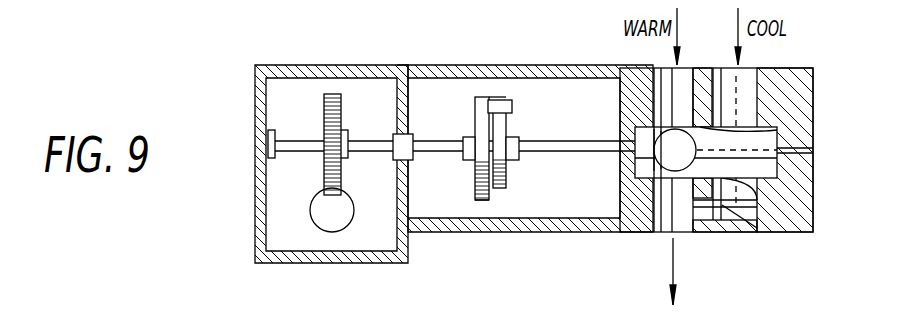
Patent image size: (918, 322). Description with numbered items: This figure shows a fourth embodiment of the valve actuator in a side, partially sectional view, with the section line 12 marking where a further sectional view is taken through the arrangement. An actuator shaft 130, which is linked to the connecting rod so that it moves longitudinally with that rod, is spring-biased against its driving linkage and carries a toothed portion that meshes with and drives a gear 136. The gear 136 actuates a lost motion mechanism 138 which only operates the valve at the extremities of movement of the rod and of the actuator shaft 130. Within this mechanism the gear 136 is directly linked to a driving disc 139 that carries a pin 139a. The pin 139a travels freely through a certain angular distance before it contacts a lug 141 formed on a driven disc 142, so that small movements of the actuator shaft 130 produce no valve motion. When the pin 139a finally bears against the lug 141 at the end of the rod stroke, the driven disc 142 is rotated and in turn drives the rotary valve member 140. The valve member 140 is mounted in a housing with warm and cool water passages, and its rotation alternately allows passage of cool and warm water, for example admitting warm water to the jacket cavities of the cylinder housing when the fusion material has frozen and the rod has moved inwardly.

The section line 12- 12 is at (535, 64).
The actuator shaft 130 is at (338, 218).
The gear 136 is at (324, 176).
The lost motion mechanism 138 is at (490, 203).
The driving disc 139 is at (475, 178).
The pin 139a is at (513, 108).
The rotary valve member 140 is at (702, 140).
The lug 141 is at (497, 99).
The driven disc 142 is at (507, 181).